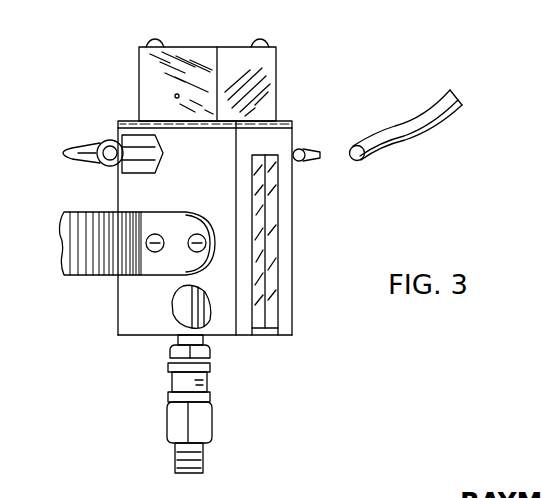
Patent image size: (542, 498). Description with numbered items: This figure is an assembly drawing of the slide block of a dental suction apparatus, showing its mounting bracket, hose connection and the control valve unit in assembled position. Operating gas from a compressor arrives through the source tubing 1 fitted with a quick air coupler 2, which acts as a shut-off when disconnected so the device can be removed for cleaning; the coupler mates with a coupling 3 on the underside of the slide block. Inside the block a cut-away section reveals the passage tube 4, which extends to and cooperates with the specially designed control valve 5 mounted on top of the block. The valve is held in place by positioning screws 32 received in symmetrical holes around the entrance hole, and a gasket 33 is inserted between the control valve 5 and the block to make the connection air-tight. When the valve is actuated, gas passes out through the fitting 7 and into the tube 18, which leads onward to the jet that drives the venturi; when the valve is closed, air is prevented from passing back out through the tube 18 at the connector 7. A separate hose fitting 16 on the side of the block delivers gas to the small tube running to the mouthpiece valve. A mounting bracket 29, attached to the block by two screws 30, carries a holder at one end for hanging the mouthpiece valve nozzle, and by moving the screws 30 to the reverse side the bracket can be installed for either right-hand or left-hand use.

The source tubing 1 is at (190, 475).
The quick air coupler 2 is at (205, 382).
The coupling 3 is at (205, 340).
The passage tube 4 is at (186, 316).
The control valve 5 is at (274, 92).
The fitting 7 is at (310, 153).
The hose fitting 16 is at (83, 146).
The tube 18 is at (402, 120).
The mounting bracket 29 is at (92, 272).
The screws 30 is at (192, 233).
The positioning screws 32 is at (258, 39).
The gasket 33 is at (138, 122).